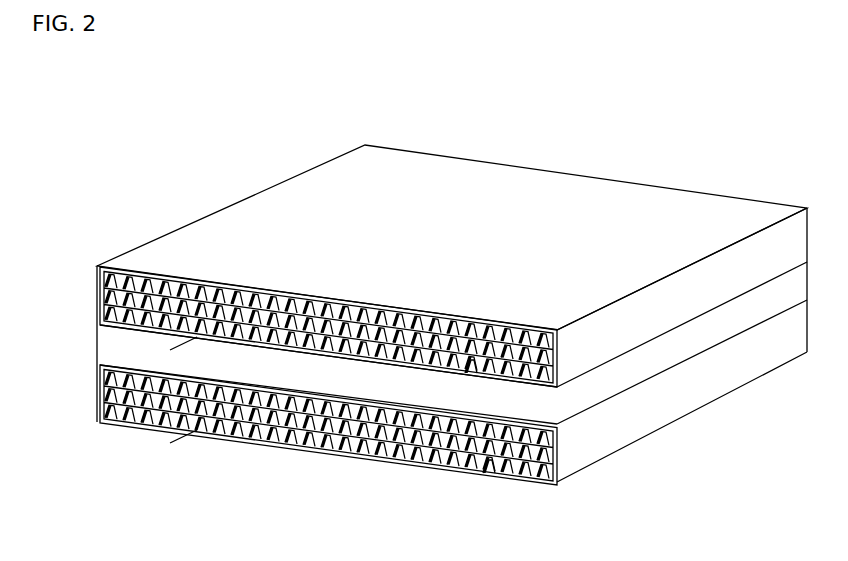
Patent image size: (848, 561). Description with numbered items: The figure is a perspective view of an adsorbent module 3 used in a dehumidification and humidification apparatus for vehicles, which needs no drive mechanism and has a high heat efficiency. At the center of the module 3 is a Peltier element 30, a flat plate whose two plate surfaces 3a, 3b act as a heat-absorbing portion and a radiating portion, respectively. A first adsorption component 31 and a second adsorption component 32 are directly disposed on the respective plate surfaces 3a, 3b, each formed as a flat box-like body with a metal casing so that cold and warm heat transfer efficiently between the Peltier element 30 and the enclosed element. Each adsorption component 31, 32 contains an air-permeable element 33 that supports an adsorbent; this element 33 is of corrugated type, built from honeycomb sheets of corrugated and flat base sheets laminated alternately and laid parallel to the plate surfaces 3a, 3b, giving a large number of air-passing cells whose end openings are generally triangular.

The adsorbent module 3 is at (286, 160).
The plate surface 3a is at (732, 298).
The plate surface 3b is at (720, 343).
The Peltier element 30 is at (630, 368).
The first adsorption component 31 is at (653, 315).
The second adsorption component 32 is at (591, 438).
The air-permeable element 33 is at (470, 372).